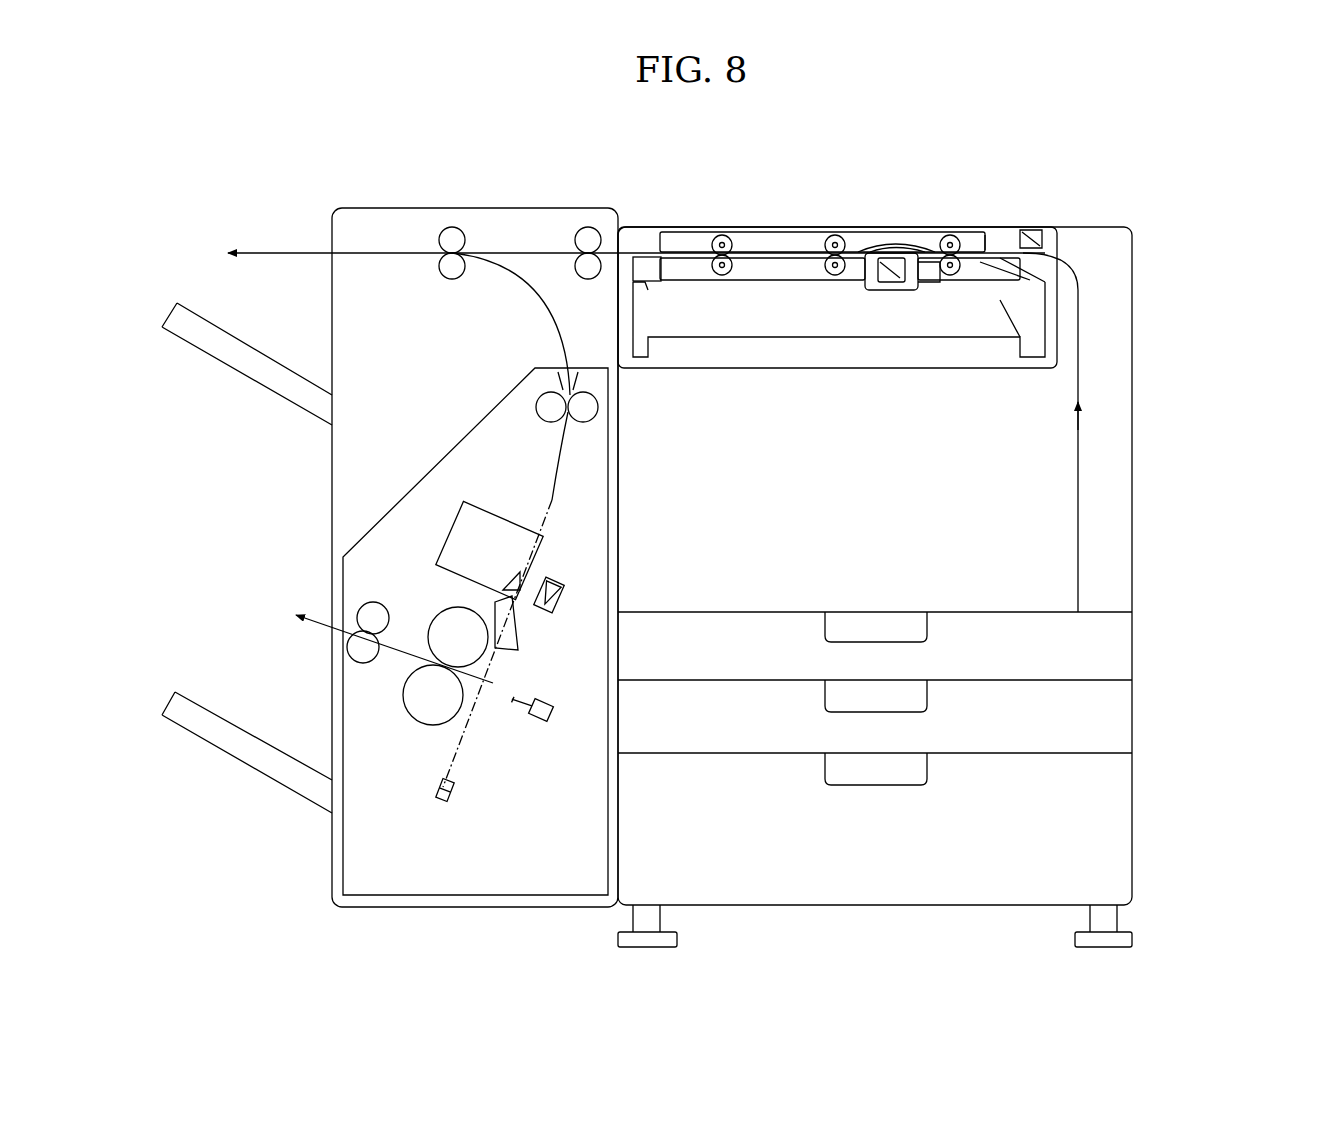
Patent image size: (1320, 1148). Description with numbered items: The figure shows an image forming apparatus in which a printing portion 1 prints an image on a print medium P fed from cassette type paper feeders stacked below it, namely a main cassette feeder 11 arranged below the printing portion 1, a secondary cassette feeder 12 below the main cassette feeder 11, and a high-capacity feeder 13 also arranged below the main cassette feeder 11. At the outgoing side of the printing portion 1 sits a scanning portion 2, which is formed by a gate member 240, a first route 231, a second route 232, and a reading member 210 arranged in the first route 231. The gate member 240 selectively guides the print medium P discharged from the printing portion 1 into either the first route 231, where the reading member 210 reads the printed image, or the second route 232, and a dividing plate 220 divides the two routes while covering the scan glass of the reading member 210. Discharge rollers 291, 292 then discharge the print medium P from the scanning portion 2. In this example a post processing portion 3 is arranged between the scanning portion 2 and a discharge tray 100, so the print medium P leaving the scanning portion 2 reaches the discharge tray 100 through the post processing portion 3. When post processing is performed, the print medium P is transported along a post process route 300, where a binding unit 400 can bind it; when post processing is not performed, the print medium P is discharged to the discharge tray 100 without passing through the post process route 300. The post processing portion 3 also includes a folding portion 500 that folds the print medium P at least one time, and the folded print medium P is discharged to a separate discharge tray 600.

The printing portion 1 is at (1162, 418).
The scanning portion 2 is at (1022, 206).
The post processing portion 3 is at (420, 185).
The main cassette feeder 11 is at (1117, 650).
The secondary cassette feeder 12 is at (1117, 723).
The high-capacity feeder 13 is at (1117, 834).
The discharge tray 100 is at (242, 362).
The reading member 210 is at (873, 292).
The dividing plate 220 is at (893, 252).
The first route 231 is at (930, 286).
The second route 232 is at (932, 256).
The gate member 240 is at (908, 250).
The discharge roller 291 is at (835, 235).
The discharge roller 292 is at (722, 235).
The post process route 300 is at (465, 753).
The binding unit 400 is at (432, 537).
The folding portion 500 is at (425, 608).
The discharge tray 600 is at (248, 757).
The print medium P is at (292, 252).